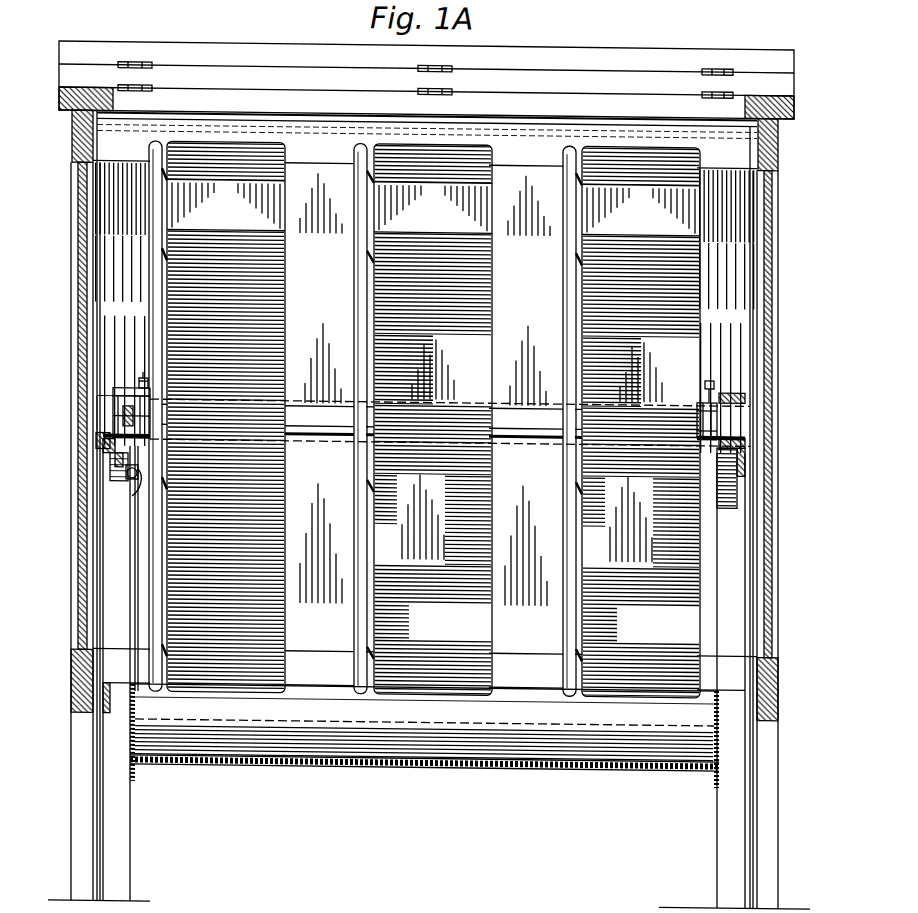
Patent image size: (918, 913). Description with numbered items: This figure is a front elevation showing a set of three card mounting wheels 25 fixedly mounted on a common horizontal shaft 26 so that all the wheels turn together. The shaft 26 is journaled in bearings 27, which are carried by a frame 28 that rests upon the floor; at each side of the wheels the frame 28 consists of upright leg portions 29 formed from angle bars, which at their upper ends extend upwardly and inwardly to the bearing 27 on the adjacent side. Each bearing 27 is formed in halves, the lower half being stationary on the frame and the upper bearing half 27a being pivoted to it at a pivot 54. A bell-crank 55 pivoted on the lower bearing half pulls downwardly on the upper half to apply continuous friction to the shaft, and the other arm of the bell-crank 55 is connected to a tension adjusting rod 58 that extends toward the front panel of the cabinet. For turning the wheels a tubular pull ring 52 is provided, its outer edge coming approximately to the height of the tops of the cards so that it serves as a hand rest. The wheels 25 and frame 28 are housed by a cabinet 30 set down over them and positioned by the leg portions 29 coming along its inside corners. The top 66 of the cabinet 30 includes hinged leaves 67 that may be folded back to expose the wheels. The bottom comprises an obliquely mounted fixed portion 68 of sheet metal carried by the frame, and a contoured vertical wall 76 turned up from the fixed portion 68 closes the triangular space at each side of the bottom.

The card mounting wheel 25 is at (293, 288).
The horizontal shaft 26 is at (335, 437).
The bearing 27 is at (103, 437).
The upper bearing half 27a is at (113, 386).
The frame 28 is at (100, 551).
The upright leg portion 29 is at (108, 861).
The cabinet 30 is at (803, 276).
The tubular pull ring 52 is at (150, 291).
The pivot 54 is at (113, 397).
The bell-crank 55 is at (115, 472).
The tension adjusting rod 58 is at (133, 494).
The top 66 is at (593, 93).
The leaf 67 is at (668, 48).
The fixed portion of the bottom 68 is at (590, 759).
The vertical wall 76 is at (714, 734).